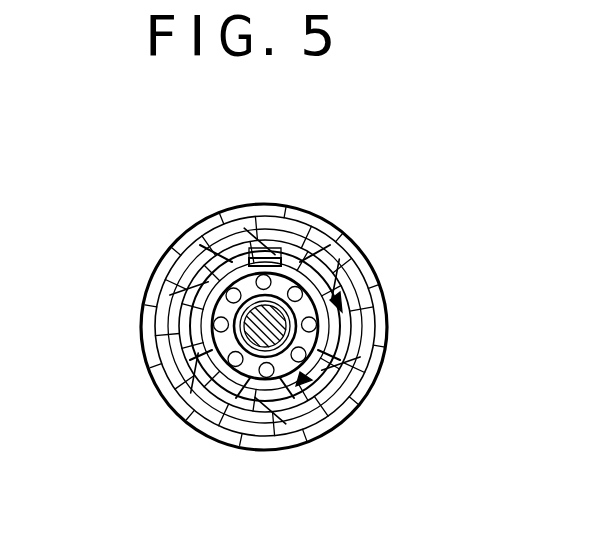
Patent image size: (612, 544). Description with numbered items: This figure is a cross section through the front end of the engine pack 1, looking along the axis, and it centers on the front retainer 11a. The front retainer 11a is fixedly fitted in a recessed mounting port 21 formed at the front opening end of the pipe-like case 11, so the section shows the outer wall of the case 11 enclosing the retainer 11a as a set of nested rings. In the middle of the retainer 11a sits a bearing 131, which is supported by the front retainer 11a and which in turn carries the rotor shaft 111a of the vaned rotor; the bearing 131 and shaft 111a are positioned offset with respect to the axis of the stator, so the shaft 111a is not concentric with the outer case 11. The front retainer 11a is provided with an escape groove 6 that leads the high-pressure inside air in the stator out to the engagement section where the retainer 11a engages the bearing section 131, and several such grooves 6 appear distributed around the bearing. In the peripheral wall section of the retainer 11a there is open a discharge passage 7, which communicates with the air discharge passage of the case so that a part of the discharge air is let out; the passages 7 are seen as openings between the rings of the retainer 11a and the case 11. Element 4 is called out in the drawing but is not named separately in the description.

The engine pack 1 is at (303, 232).
The housing 4 is at (363, 270).
The escape groove 6 is at (222, 232).
The discharge passage 7 is at (182, 270).
The pipe-like case 11 is at (352, 360).
The front retainer 11a is at (268, 248).
The mounting port 21 is at (373, 181).
The bearing 131 is at (356, 298).
The rotor shaft 111a is at (262, 345).